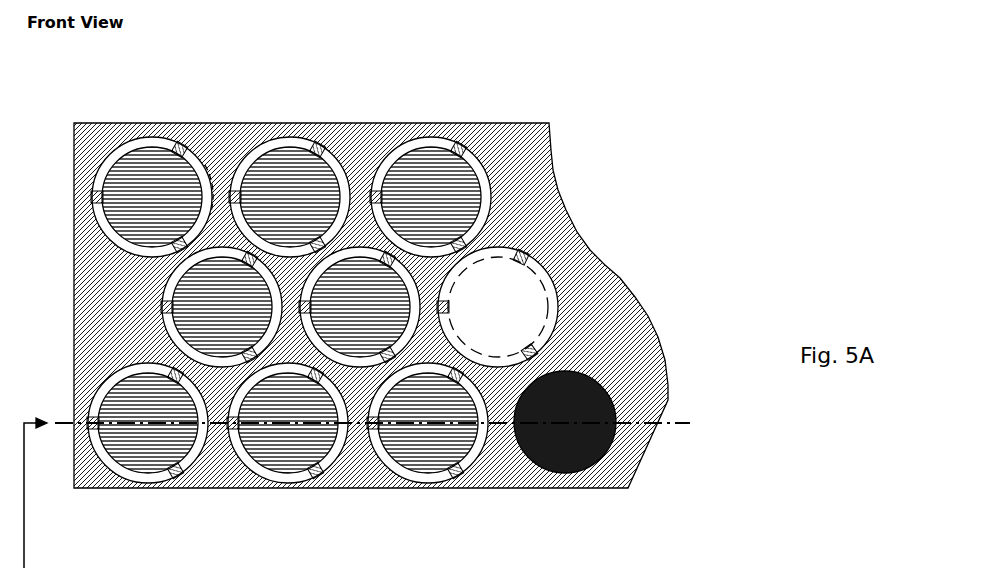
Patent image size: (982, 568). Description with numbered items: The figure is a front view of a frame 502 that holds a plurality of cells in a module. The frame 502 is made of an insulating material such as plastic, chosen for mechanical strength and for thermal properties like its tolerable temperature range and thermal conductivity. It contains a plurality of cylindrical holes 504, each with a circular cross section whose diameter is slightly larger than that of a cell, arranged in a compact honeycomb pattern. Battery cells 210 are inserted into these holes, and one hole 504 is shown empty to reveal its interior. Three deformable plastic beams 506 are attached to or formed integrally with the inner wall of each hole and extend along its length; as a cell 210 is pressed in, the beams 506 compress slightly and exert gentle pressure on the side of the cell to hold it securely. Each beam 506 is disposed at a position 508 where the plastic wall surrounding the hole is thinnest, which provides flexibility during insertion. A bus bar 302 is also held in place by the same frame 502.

The frame 502 is at (487, 143).
The battery cell 210 is at (447, 198).
The position 508 is at (228, 175).
The cylindrical hole 504 is at (527, 298).
The deformable plastic beam 506 is at (522, 263).
The bus bar 302 is at (578, 445).